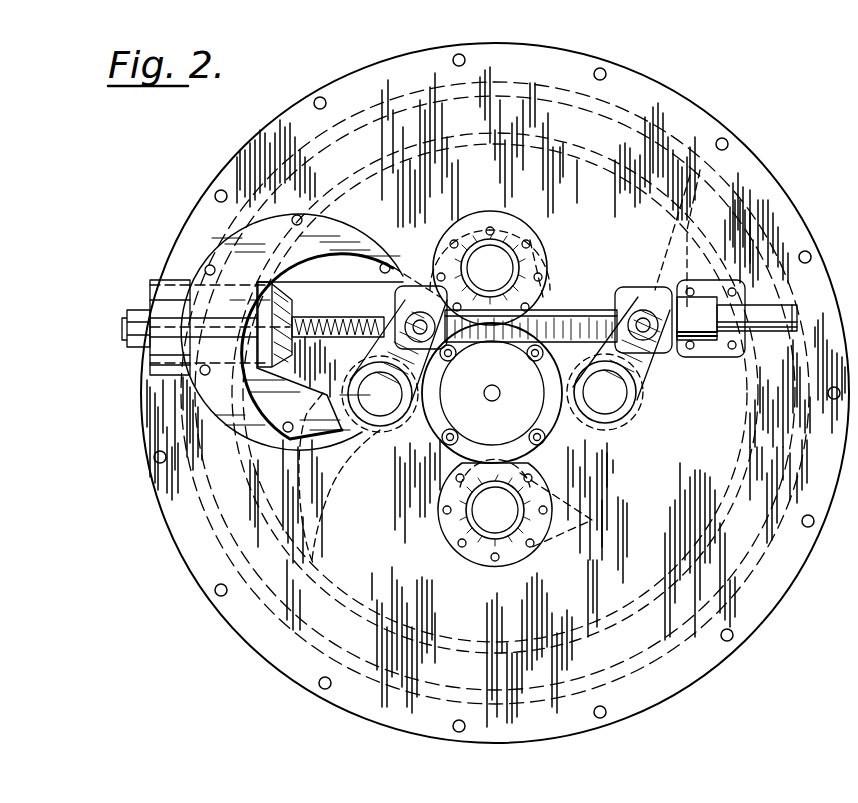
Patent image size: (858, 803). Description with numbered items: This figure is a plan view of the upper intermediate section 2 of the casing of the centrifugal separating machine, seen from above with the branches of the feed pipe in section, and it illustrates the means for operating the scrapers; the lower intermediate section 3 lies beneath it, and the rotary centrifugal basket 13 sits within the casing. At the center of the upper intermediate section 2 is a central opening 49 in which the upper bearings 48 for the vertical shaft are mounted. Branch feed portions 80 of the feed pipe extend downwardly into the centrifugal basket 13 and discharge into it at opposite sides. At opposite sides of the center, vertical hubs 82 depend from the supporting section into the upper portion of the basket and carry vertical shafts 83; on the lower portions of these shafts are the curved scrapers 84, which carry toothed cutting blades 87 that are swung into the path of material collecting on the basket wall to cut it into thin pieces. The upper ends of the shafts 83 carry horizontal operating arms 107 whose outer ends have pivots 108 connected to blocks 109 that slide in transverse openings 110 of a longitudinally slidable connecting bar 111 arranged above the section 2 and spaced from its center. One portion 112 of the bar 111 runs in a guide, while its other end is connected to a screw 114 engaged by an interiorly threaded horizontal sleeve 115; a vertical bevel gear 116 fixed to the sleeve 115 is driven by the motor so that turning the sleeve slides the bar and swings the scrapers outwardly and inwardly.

The upper intermediate section 2 is at (495, 393).
The lower intermediate section 3 is at (633, 128).
The centrifugal basket 13 is at (495, 140).
The upper bearings 48 is at (492, 393).
The central opening 49 is at (440, 432).
The branch feed portions 80 is at (528, 250).
The vertical hubs 82 is at (612, 428).
The vertical shafts 83 is at (492, 393).
The curved scrapers 84 is at (658, 262).
The toothed cutting blades 87 is at (672, 223).
The operating arms 107 is at (386, 349).
The pivots 108 is at (412, 322).
The blocks 109 is at (452, 362).
The transverse openings 110 is at (415, 312).
The connecting bar 111 is at (575, 310).
The portion of the slidable bar 112 is at (777, 331).
The screw 114 is at (348, 318).
The sleeve 115 is at (326, 314).
The bevel gear 116 is at (282, 282).